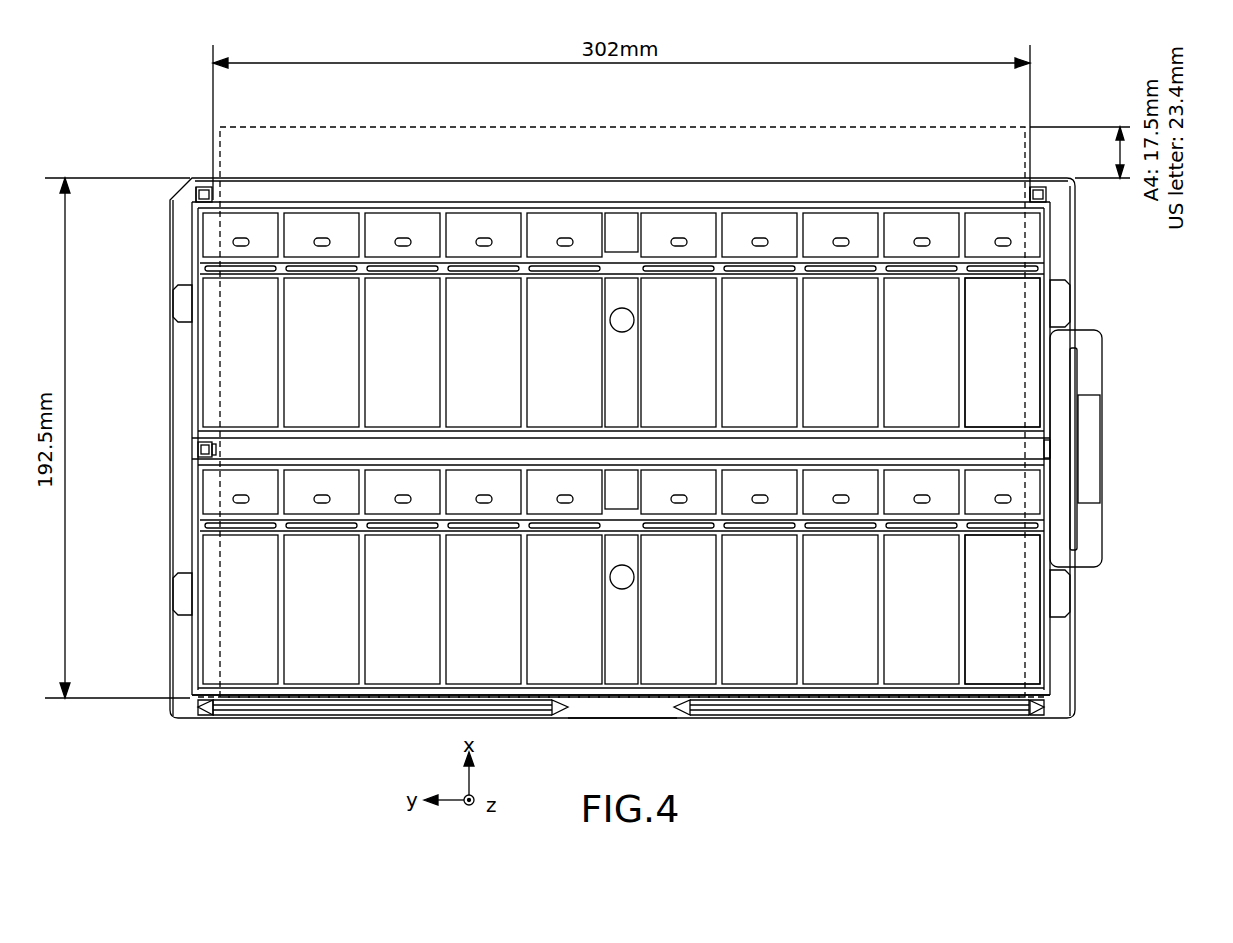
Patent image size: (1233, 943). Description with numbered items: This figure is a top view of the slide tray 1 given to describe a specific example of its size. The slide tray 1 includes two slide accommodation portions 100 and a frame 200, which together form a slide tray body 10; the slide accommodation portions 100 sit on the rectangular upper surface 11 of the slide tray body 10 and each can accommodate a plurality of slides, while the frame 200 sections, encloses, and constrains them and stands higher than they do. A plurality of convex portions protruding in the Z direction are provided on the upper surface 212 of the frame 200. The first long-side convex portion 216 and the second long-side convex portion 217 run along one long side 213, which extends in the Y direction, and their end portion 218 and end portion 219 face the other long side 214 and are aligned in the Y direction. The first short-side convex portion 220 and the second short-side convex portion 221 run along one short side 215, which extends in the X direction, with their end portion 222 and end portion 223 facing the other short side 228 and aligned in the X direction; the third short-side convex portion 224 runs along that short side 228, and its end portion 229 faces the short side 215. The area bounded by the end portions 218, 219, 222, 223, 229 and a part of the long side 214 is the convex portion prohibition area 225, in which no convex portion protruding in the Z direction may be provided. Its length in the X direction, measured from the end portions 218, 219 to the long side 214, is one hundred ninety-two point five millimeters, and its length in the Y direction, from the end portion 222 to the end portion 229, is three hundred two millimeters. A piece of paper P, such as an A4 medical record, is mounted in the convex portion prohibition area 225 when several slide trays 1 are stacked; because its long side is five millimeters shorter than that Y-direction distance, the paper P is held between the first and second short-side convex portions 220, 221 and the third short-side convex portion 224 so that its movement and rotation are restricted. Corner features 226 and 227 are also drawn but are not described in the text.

The slide tray 1 is at (693, 165).
The slide tray body 10 is at (1176, 300).
The upper surface 11 is at (398, 200).
The slide accommodation portion 100 is at (1012, 306).
The frame 200 is at (1115, 447).
The upper surface of the frame 212 is at (180, 368).
The long side 213 is at (620, 719).
The other long side 214 is at (623, 181).
The short side 215 is at (175, 493).
The first long-side convex portion 216 is at (355, 707).
The second long-side convex portion 217 is at (905, 707).
The end portion of the first long-side convex portion 218 is at (334, 693).
The end portion of the second long-side convex portion 219 is at (935, 693).
The first short-side convex portion 220 is at (196, 196).
The second short-side convex portion 221 is at (198, 448).
The end portion of the first short-side convex portion 222 is at (212, 193).
The end portion of the second short-side convex portion 223 is at (215, 450).
The third short-side convex portion 224 is at (1040, 188).
The convex portion prohibition area 225 is at (513, 202).
The bottom-left corner 226 is at (185, 709).
The bottom-right corner 227 is at (1065, 713).
The other short side 228 is at (1080, 665).
The end portion of the third short-side convex portion 229 is at (1030, 195).
The piece of paper P is at (848, 127).